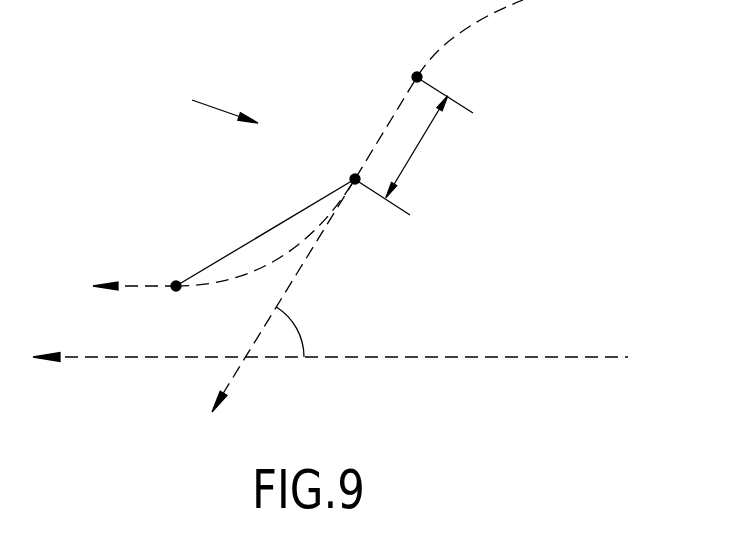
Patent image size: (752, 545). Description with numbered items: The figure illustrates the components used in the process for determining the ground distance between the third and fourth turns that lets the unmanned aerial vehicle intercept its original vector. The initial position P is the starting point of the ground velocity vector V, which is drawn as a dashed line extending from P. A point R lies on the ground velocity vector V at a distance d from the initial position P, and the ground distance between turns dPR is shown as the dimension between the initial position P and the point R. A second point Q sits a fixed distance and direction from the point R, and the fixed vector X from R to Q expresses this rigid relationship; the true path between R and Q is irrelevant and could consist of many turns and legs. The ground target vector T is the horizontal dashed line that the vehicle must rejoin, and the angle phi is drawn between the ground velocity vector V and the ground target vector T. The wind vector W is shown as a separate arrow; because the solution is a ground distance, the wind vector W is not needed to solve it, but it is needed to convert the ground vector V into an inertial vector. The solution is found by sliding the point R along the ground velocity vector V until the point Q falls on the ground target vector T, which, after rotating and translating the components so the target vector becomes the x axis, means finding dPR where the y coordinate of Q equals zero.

The initial position P is at (428, 81).
The point Q is at (137, 267).
The point R is at (366, 180).
The fixed vector from R to Q X is at (253, 203).
The ground velocity vector V is at (350, 254).
The ground target vector T is at (393, 326).
The wind vector W is at (185, 84).
The angle phi between V and T phi is at (297, 332).
The ground distance between turns dPR is at (423, 147).